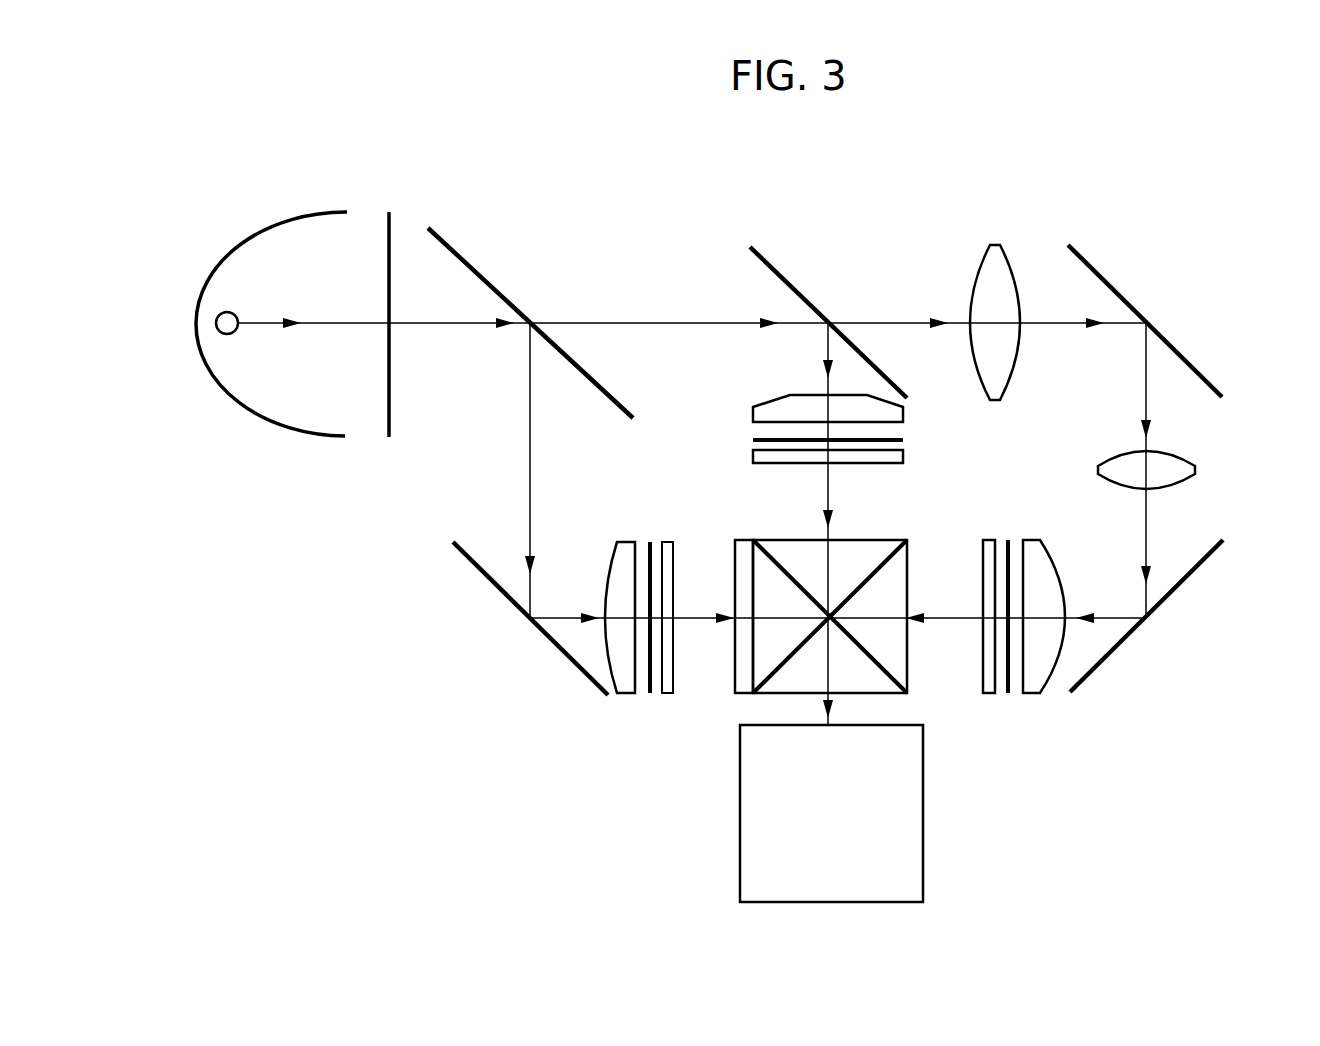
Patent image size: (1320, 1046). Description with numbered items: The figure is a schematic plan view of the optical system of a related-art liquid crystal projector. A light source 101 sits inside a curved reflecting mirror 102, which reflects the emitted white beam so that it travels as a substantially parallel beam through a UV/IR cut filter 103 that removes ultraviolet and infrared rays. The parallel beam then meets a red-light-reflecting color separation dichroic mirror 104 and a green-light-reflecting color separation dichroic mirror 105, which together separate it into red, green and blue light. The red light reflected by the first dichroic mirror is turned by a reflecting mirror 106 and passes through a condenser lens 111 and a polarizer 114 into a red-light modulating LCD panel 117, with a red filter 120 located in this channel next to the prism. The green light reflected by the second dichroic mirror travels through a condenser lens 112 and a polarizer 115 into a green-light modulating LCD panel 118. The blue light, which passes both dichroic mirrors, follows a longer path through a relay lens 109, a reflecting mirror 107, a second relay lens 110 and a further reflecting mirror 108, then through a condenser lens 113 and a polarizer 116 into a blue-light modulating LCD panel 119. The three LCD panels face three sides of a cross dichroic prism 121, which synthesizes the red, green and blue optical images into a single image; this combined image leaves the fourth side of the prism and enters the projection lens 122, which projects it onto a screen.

The light source 101 is at (236, 332).
The curved reflecting mirror 102 is at (292, 428).
The UV/IR cut filter 103 is at (386, 427).
The red-light-reflecting color separation dichroic mirror 104 is at (451, 245).
The green-light-reflecting color separation dichroic mirror 105 is at (773, 265).
The reflecting mirror 106 is at (491, 582).
The reflecting mirror 107 is at (1085, 258).
The reflecting mirror 108 is at (1192, 572).
The relay lens 109 is at (996, 245).
The relay lens 110 is at (1195, 470).
The condenser lens 111 is at (618, 695).
The condenser lens 112 is at (753, 412).
The condenser lens 113 is at (1045, 695).
The polarizer 114 is at (650, 695).
The polarizer 115 is at (753, 440).
The polarizer 116 is at (1012, 695).
The red-light modulating LCD panel 117 is at (670, 695).
The green-light modulating LCD panel 118 is at (753, 453).
The blue-light modulating LCD panel 119 is at (990, 695).
The red filter 120 is at (735, 665).
The cross dichroic prism 121 is at (800, 540).
The projection lens 122 is at (740, 845).